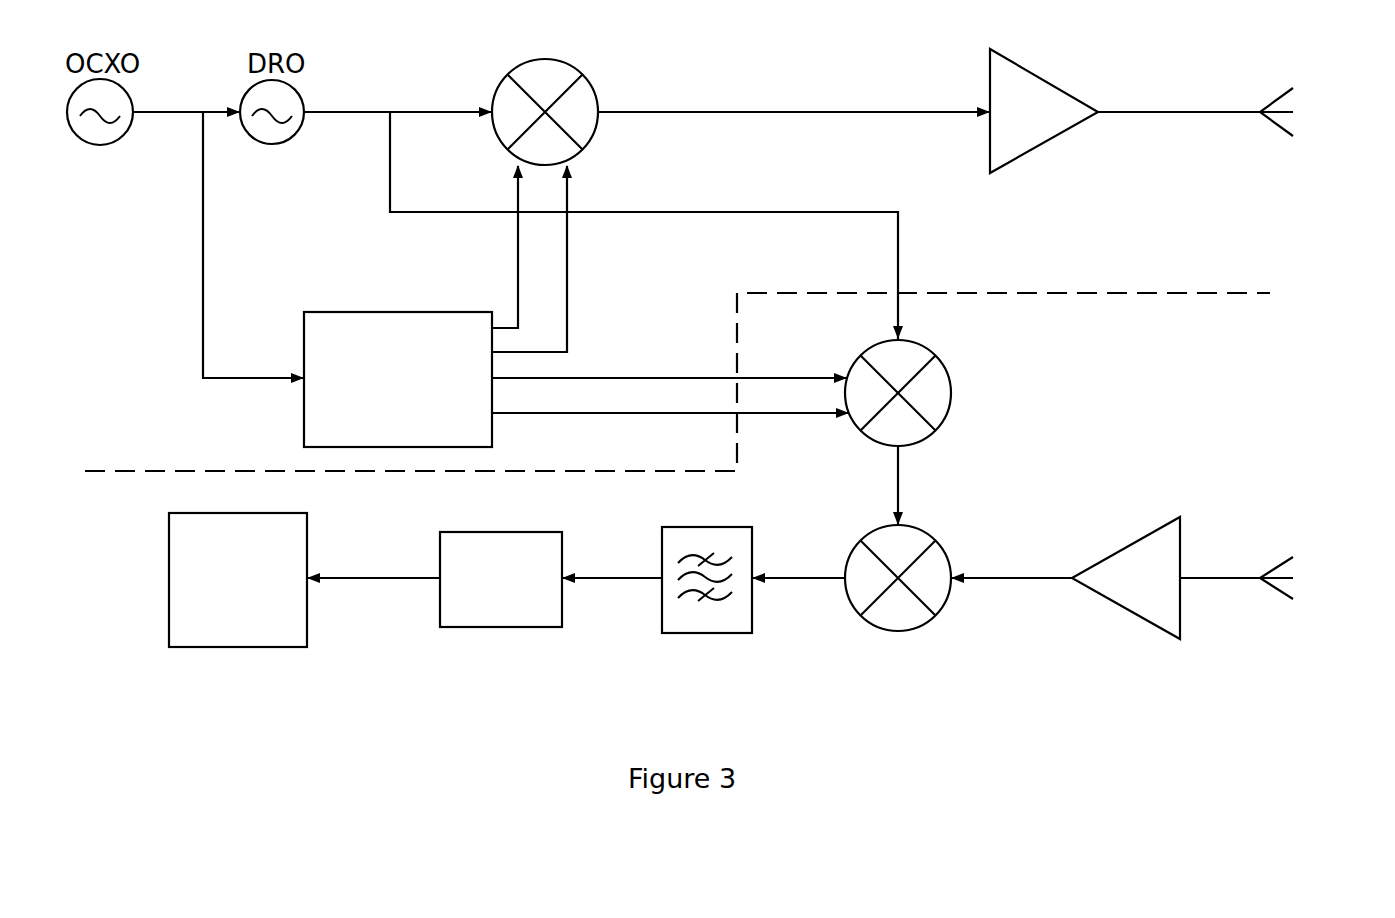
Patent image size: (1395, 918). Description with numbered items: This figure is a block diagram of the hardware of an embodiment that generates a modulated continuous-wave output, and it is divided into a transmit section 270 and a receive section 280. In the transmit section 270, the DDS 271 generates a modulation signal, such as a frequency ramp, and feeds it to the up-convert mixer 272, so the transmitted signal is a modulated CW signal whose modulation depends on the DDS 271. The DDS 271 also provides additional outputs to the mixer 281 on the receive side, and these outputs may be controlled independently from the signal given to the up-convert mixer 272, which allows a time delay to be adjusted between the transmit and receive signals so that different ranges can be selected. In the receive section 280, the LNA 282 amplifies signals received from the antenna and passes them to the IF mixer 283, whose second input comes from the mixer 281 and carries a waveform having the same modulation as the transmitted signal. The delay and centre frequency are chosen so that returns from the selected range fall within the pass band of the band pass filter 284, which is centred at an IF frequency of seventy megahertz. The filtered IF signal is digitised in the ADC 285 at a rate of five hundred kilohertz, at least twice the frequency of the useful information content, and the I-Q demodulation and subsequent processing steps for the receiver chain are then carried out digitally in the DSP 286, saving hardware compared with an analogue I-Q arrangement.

The transmit section 270 is at (677, 351).
The DDS 271 is at (362, 312).
The up-convert mixer 272 is at (568, 68).
The receive section 280 is at (1275, 547).
The mixer 281 is at (947, 385).
The LNA 282 is at (1163, 625).
The IF mixer 283 is at (905, 631).
The band pass filter 284 is at (713, 633).
The ADC 285 is at (492, 627).
The DSP 286 is at (278, 647).